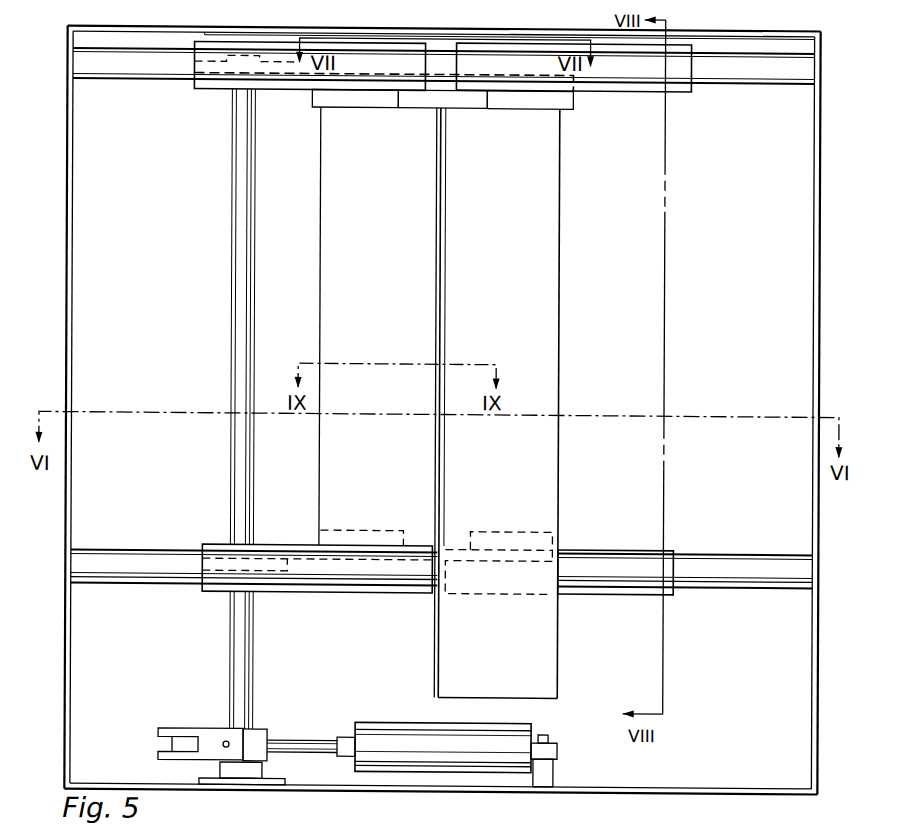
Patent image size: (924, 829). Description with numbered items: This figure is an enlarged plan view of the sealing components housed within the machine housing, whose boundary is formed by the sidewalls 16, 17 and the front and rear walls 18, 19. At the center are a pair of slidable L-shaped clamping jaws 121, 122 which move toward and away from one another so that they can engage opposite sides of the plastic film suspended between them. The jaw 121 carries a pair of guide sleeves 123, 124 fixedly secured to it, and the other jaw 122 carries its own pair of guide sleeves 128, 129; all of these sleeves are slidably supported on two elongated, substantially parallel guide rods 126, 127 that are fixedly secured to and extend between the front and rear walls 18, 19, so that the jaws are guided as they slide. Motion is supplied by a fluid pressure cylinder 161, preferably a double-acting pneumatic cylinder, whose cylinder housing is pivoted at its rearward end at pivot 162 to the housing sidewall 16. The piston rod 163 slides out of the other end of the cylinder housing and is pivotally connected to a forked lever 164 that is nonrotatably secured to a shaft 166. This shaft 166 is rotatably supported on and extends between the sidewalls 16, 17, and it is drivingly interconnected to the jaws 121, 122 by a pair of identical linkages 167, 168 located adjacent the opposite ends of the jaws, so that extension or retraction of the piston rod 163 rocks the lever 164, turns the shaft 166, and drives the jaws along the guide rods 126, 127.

The housing sidewall 16 is at (759, 792).
The sidewall 17 is at (795, 28).
The front wall 18 is at (819, 229).
The rear wall 19 is at (65, 187).
The clamping jaw 121 is at (560, 327).
The clamping jaw 122 is at (316, 329).
The guide sleeve 123 is at (594, 557).
The guide sleeve 124 is at (622, 86).
The guide rod 126 is at (741, 568).
The guide rod 127 is at (734, 65).
The guide sleeve 128 is at (283, 581).
The guide sleeve 129 is at (304, 83).
The fluid pressure cylinder 161 is at (389, 741).
The pivot 162 is at (552, 746).
The piston rod 163 is at (303, 743).
The forked lever 164 is at (208, 740).
The shaft 166 is at (232, 242).
The linkage 167 is at (212, 537).
The linkage 168 is at (204, 102).